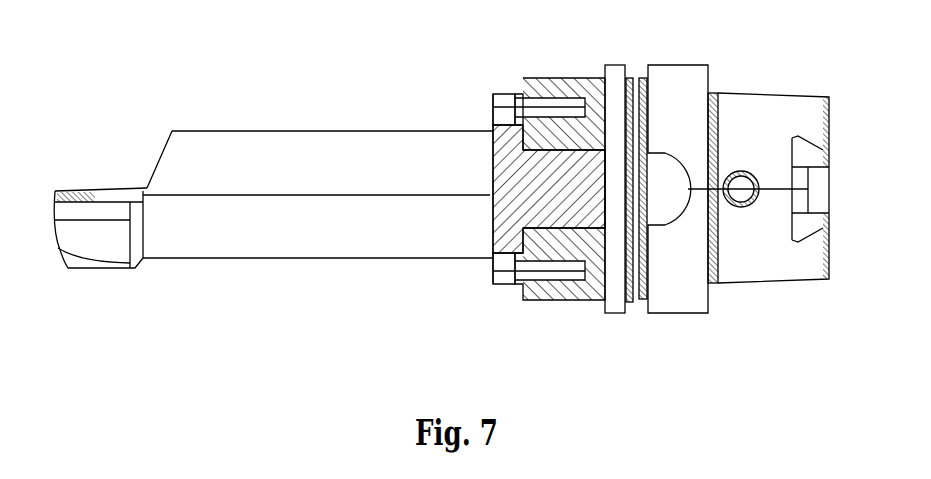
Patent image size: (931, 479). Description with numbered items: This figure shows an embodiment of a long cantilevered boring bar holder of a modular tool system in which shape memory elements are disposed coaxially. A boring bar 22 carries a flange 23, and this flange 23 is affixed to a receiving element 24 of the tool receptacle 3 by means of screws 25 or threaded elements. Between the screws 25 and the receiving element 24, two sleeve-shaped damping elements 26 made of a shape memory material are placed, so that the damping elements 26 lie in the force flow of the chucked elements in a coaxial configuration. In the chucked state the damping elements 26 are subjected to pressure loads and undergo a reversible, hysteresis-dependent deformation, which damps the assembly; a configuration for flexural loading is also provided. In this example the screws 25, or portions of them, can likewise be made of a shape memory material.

The tool receptacle 3 is at (685, 66).
The boring bar 22 is at (236, 141).
The flange 23 is at (520, 93).
The receiving element 24 is at (590, 80).
The screws 25 is at (490, 99).
The sleeve-shaped damping elements 26 is at (545, 80).